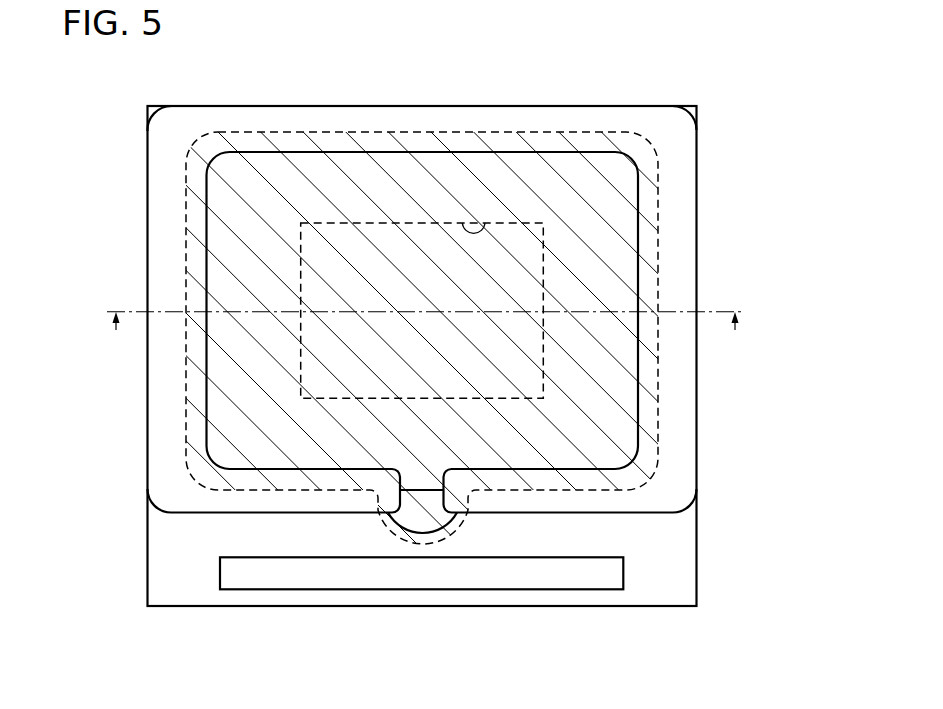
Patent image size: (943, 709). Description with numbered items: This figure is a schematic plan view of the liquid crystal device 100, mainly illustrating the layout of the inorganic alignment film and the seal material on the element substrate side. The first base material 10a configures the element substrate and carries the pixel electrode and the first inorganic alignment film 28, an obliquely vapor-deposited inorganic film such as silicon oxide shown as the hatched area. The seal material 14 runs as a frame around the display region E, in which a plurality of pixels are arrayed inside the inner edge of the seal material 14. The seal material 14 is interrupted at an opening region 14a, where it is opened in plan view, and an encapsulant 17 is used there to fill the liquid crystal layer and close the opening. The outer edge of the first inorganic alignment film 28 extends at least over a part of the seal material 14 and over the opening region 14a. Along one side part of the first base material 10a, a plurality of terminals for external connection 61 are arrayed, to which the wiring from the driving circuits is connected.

The liquid crystal device 100 is at (706, 81).
The first base material 10a is at (690, 568).
The seal material 14 is at (690, 195).
The opening region 14a is at (428, 468).
The first inorganic alignment film 28 is at (310, 165).
The display region E is at (482, 222).
The encapsulant 17 is at (421, 527).
The terminals for external connection 61 is at (527, 578).